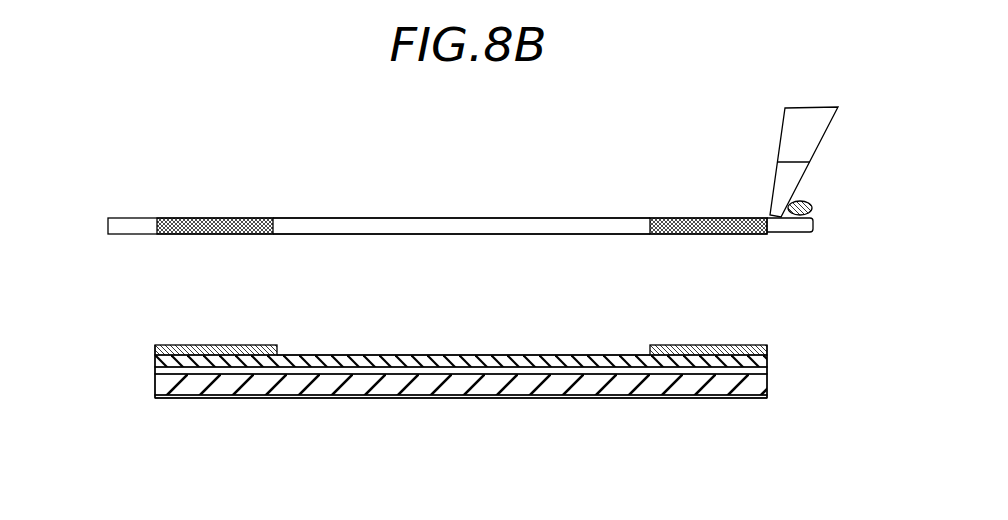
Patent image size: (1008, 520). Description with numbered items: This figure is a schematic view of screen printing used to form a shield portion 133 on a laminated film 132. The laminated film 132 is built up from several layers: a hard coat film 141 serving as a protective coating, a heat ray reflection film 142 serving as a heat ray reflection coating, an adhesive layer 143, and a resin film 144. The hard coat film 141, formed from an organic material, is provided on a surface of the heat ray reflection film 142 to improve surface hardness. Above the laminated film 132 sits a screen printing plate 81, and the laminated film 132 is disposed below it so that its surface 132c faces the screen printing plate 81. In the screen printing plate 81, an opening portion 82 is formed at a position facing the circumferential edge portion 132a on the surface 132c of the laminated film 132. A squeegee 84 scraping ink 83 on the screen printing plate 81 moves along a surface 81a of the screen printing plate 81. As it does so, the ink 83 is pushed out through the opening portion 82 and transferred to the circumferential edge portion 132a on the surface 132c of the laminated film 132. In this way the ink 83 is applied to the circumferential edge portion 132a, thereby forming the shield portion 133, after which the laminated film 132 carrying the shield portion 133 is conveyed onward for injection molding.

The screen printing plate 81 is at (140, 228).
The surface of the screen printing plate 81a is at (472, 218).
The opening portion 82 is at (170, 222).
The ink 83 is at (816, 206).
The squeegee 84 is at (816, 139).
The laminated film 132 is at (355, 340).
The circumferential edge portion 132a is at (203, 353).
The surface of the laminated film 132c is at (487, 355).
The shield portion 133 is at (155, 348).
The hard coat film 141 is at (528, 398).
The heat ray reflection film 142 is at (768, 377).
The adhesive layer 143 is at (246, 398).
The resin film 144 is at (580, 368).